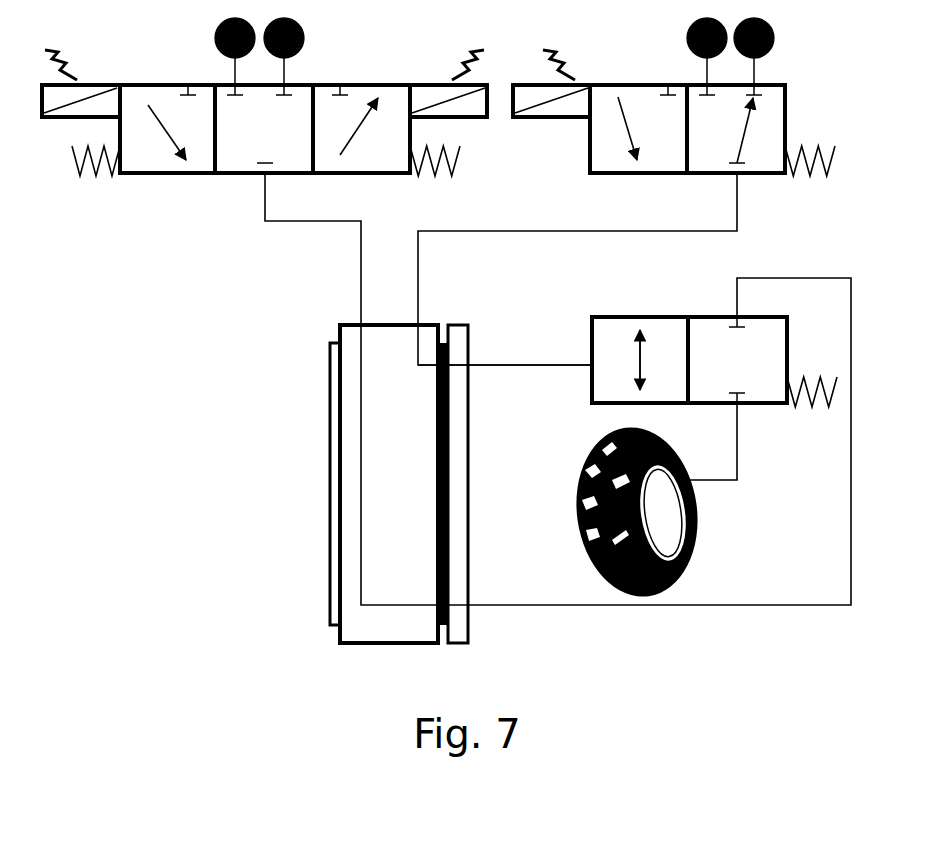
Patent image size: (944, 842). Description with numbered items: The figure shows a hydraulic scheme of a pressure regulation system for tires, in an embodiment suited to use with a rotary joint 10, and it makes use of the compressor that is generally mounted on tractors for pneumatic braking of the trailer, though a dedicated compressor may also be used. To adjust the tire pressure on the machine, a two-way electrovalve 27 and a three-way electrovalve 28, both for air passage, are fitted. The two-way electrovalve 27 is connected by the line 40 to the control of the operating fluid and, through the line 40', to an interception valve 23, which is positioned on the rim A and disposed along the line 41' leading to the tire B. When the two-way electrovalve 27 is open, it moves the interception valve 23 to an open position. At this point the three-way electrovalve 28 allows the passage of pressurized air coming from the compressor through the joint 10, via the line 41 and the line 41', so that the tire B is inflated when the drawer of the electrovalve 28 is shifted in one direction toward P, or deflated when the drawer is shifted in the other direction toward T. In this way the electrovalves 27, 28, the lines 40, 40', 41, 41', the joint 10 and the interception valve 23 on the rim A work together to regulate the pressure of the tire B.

The joint 10 is at (300, 465).
The interception valve 23 is at (694, 288).
The two-way electrovalve 27 is at (802, 90).
The three-way electrovalve 28 is at (215, 205).
The line 40 is at (577, 269).
The line 40' is at (505, 390).
The line 41 is at (576, 389).
The line 41' is at (741, 441).
The rim A is at (656, 527).
The tire B is at (686, 562).